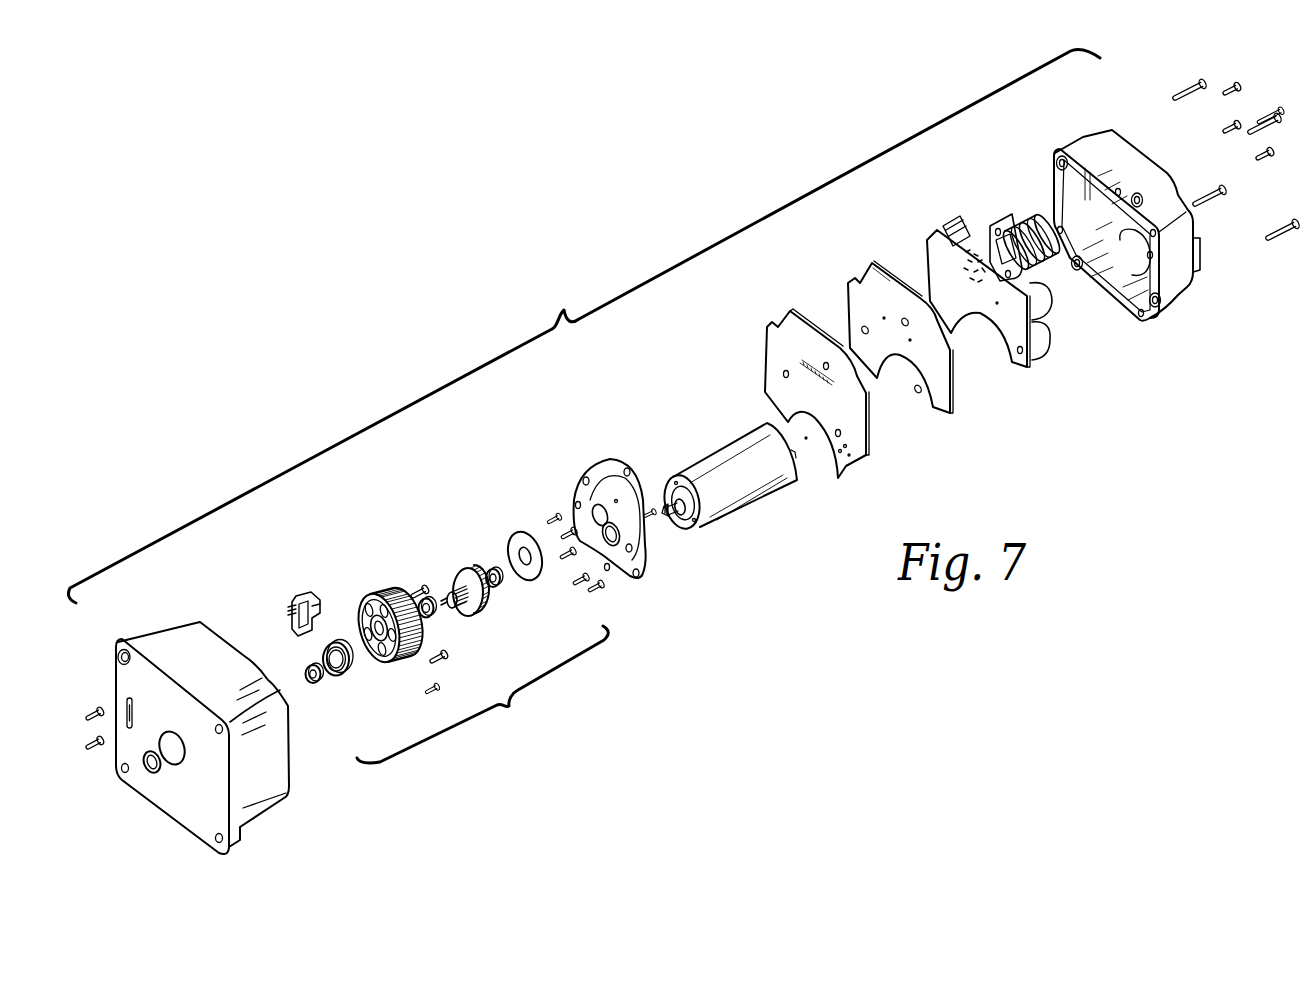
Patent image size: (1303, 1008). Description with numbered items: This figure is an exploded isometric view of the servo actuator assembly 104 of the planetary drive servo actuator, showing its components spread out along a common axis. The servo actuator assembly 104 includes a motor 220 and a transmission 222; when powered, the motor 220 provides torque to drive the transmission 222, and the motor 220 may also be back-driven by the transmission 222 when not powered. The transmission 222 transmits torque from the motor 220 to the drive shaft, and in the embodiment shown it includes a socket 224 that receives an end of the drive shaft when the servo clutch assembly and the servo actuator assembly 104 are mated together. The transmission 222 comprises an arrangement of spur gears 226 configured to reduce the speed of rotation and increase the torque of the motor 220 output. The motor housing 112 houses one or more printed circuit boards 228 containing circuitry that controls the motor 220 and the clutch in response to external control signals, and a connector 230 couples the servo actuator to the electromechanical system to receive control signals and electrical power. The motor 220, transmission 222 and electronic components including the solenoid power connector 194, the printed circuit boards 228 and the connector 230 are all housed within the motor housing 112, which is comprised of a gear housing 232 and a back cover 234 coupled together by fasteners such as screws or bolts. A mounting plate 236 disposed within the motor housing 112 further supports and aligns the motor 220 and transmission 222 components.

The servo actuator assembly 104 is at (584, 326).
The motor housing 112 is at (206, 826).
The solenoid power connector 194 is at (298, 600).
The motor 220 is at (713, 521).
The transmission 222 is at (482, 694).
The socket 224 is at (373, 658).
The spur gears 226 is at (450, 572).
The printed circuit boards 228 is at (937, 240).
The connector 230 is at (1012, 216).
The gear housing 232 is at (187, 638).
The back cover 234 is at (1176, 288).
The mounting plate 236 is at (585, 478).